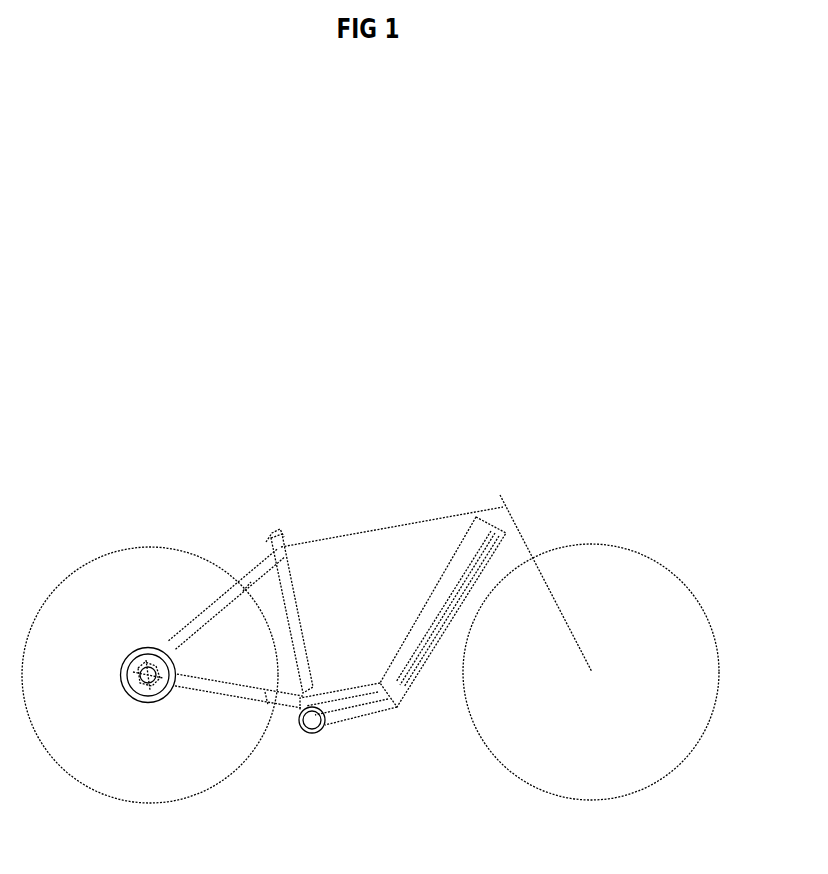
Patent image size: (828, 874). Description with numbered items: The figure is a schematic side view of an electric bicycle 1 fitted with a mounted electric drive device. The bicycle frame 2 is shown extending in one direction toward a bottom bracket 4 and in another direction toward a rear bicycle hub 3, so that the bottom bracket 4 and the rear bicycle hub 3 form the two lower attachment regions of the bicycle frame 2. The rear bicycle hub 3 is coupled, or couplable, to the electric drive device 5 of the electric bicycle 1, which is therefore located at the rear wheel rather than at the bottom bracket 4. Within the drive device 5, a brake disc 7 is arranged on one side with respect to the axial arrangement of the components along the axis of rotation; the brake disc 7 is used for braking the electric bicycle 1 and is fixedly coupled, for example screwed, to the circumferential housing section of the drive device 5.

The electric bicycle 1 is at (187, 352).
The bicycle frame 2 is at (302, 517).
The rear bicycle hub 3 is at (157, 690).
The bottom bracket 4 is at (311, 722).
The electric drive device 5 is at (135, 715).
The brake disc 7 is at (132, 650).